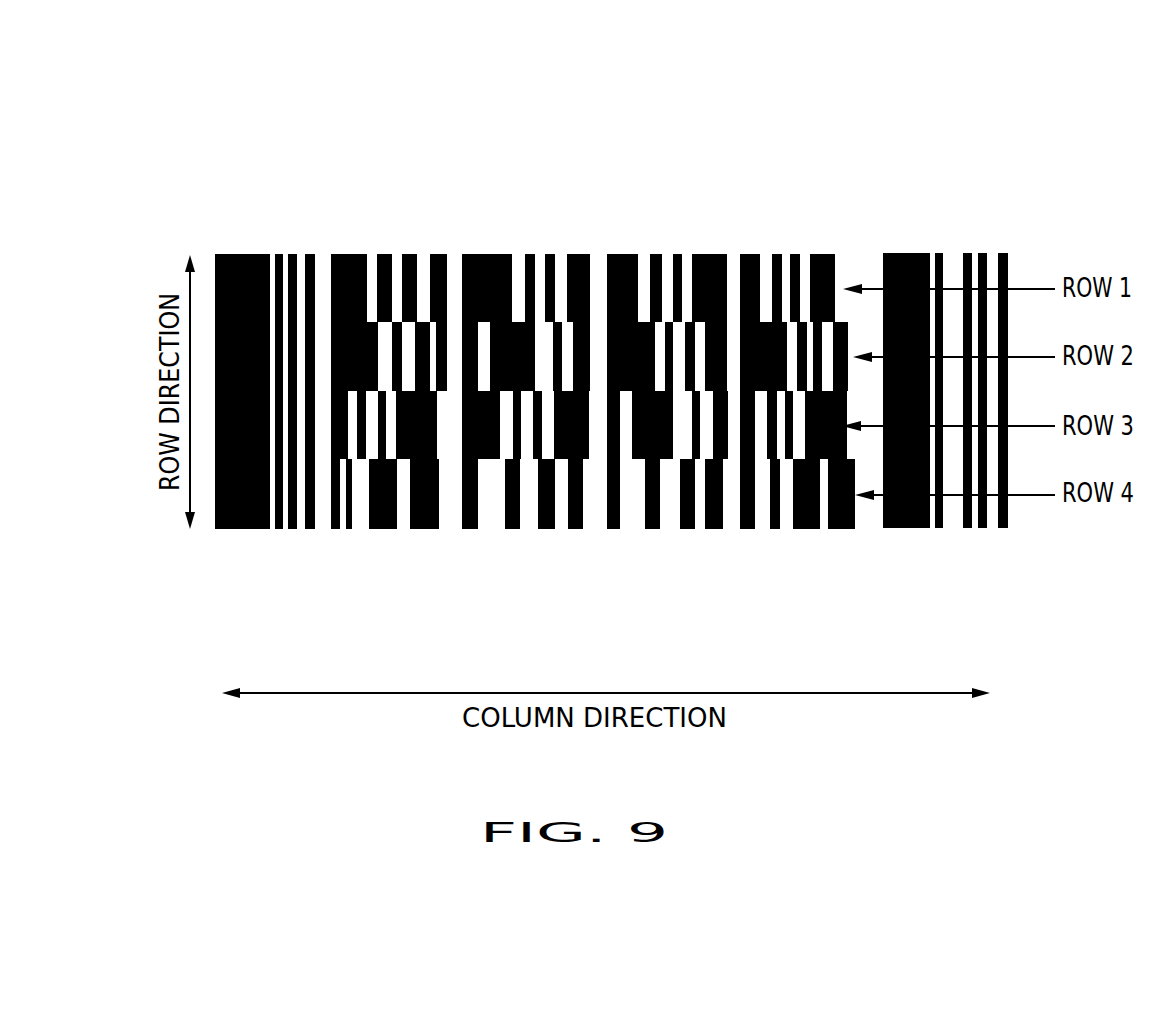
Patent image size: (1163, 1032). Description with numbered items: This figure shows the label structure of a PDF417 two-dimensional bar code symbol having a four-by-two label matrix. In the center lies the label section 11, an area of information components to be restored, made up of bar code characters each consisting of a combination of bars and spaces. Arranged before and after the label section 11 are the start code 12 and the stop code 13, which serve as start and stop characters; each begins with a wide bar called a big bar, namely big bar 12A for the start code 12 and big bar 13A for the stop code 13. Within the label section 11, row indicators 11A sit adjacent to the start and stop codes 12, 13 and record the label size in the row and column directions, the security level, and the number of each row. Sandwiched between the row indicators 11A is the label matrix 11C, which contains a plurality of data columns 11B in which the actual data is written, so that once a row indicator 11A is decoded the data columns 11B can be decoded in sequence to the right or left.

The label section 11 is at (873, 588).
The row indicator 11A is at (448, 254).
The data column 11B is at (588, 254).
The label matrix 11C is at (730, 531).
The start code 12 is at (277, 341).
The big bar 12A is at (242, 529).
The stop code 13 is at (996, 394).
The big bar 13A is at (905, 529).